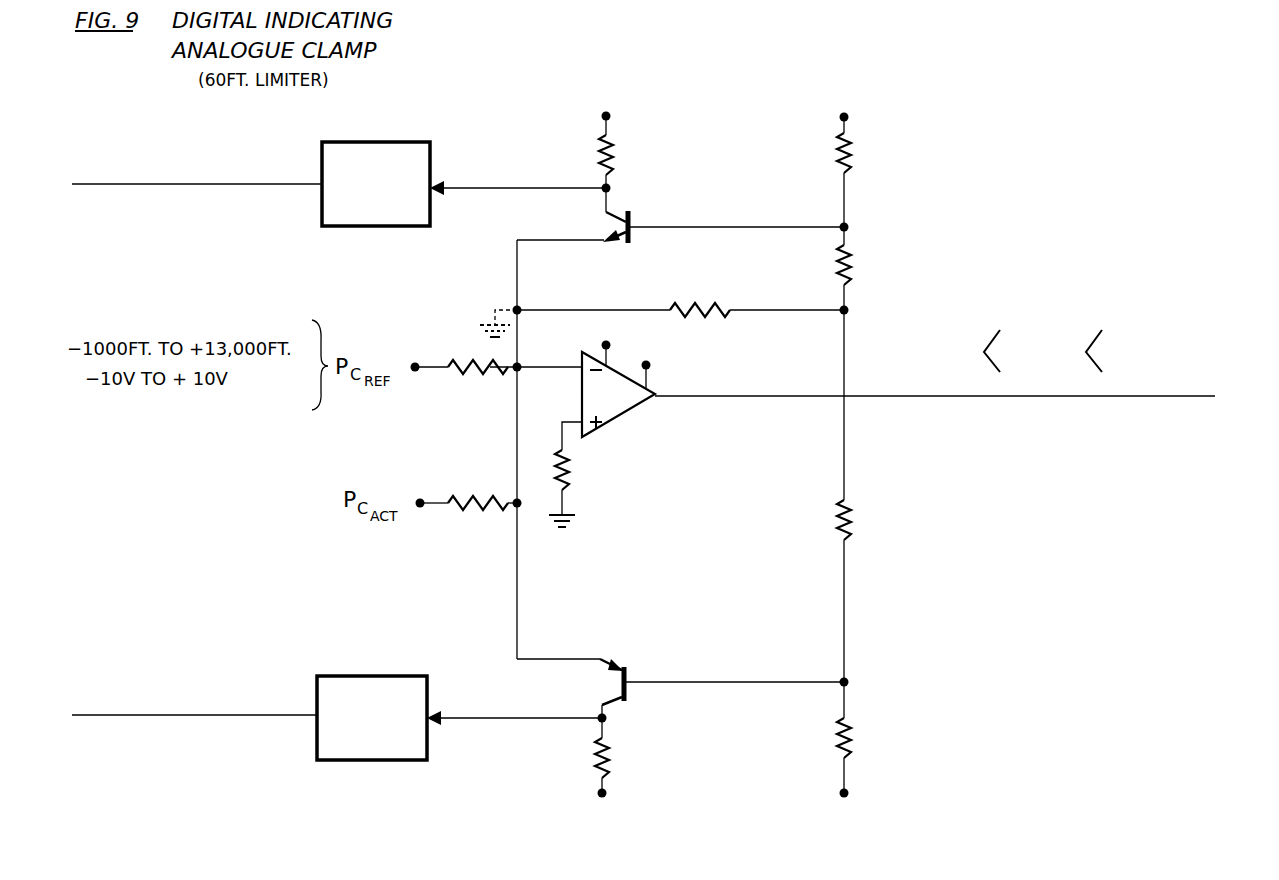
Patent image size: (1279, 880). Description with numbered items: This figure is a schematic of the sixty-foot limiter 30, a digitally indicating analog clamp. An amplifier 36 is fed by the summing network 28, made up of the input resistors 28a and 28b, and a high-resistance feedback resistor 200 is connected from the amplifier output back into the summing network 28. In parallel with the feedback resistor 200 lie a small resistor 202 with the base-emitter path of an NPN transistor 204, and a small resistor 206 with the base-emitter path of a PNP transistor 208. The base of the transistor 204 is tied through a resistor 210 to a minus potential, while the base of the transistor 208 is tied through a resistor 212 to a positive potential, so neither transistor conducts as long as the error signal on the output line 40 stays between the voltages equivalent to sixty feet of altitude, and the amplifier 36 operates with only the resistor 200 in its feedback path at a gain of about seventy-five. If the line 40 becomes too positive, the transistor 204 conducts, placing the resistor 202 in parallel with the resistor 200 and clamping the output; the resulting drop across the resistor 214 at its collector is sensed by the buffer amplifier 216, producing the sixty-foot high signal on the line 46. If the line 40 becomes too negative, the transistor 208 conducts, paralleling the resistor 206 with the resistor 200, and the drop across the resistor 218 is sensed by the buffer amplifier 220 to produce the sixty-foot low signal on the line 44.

The 60-foot limiter 30 is at (505, 90).
The line 46 is at (75, 184).
The line 44 is at (75, 715).
The buffer amplifier 216 is at (400, 128).
The buffer amplifier 220 is at (396, 660).
The resistor 214 is at (603, 152).
The resistor 218 is at (610, 757).
The transistor 204 is at (632, 238).
The transistor 208 is at (632, 672).
The resistor 210 is at (850, 154).
The resistor 202 is at (850, 264).
The resistor 206 is at (850, 514).
The resistor 212 is at (850, 742).
The feedback resistor 200 is at (714, 286).
The summing network 28 is at (500, 352).
The resistor 28a is at (470, 378).
The resistor 28b is at (490, 476).
The amplifier 36 is at (620, 414).
The line 40 is at (1214, 396).